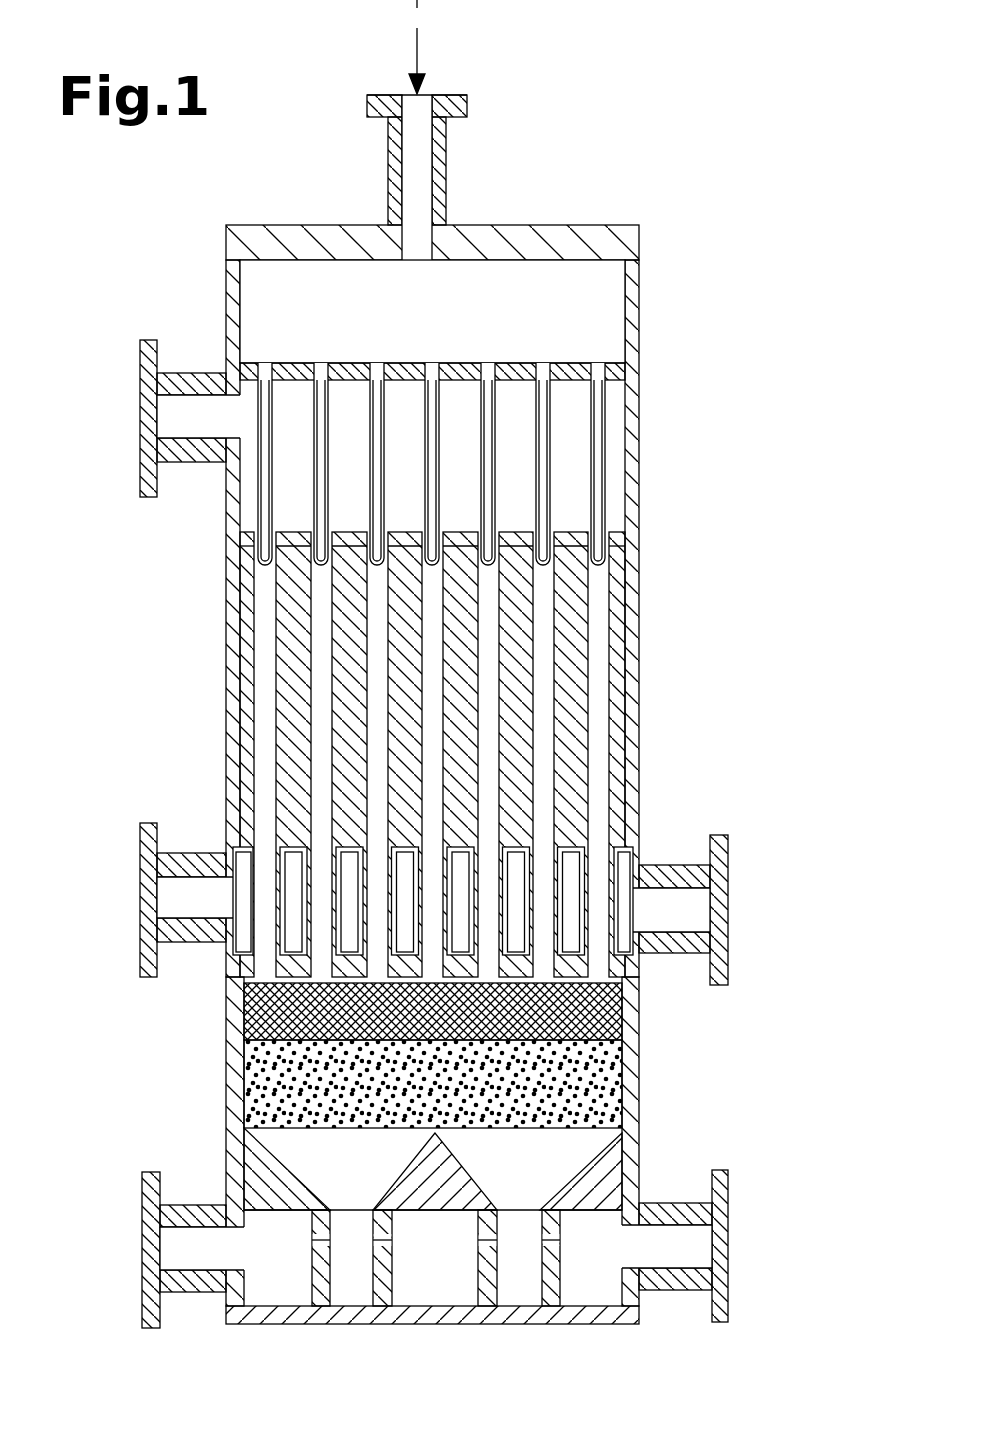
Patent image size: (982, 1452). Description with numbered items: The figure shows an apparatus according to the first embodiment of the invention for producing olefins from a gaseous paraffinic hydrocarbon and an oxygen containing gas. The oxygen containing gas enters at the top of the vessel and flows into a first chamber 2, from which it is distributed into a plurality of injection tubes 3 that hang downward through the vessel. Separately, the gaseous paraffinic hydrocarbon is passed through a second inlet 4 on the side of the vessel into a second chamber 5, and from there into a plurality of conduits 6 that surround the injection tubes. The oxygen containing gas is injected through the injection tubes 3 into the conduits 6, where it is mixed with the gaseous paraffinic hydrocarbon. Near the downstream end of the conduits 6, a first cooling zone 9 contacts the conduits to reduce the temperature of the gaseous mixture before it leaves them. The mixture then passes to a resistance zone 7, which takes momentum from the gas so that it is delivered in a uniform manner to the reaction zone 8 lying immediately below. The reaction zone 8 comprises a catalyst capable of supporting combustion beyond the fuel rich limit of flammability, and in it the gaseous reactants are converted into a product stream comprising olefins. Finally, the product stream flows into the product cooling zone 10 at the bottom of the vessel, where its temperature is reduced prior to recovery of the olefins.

The first chamber 2 is at (520, 328).
The injection tubes 3 is at (595, 500).
The second inlet 4 is at (120, 418).
The second chamber 5 is at (297, 407).
The conduits 6 is at (268, 745).
The resistance zone 7 is at (312, 1011).
The reaction zone 8 is at (317, 1093).
The first cooling zone 9 is at (678, 908).
The product cooling zone 10 is at (685, 1247).